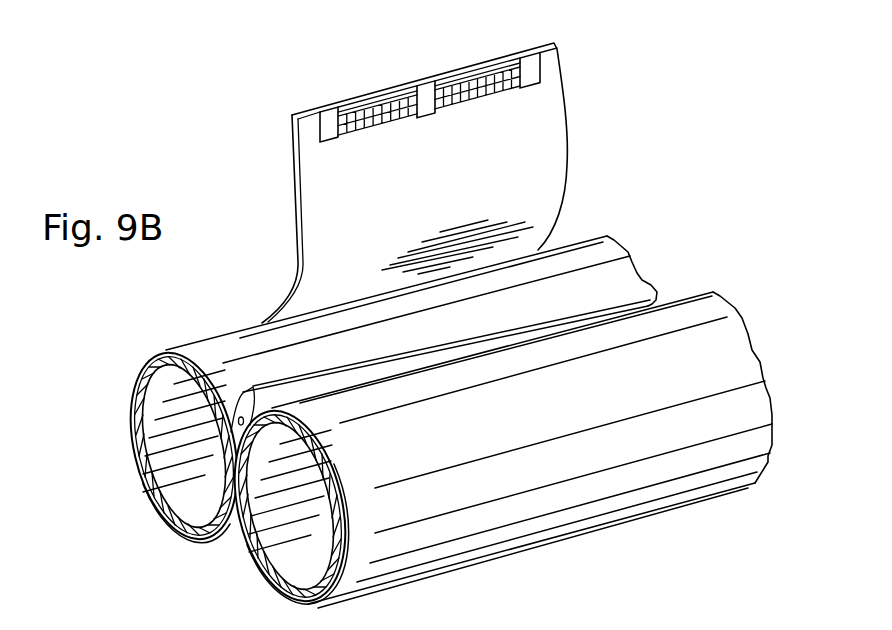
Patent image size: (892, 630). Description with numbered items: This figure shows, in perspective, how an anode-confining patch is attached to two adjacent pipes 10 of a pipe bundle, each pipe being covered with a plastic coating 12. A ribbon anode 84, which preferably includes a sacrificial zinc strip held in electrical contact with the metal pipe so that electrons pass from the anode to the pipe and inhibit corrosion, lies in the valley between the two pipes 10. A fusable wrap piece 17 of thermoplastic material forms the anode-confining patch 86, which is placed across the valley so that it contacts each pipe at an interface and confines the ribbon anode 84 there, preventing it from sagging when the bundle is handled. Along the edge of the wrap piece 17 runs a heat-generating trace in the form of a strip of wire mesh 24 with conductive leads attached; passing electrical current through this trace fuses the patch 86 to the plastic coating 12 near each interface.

The pipe 10 is at (133, 394).
The plastic coating 12 is at (163, 507).
The wrap piece 17 is at (568, 148).
The wire mesh conductor 24 is at (362, 126).
The ribbon anode 84 is at (256, 384).
The anode-confining patch 86 is at (568, 187).